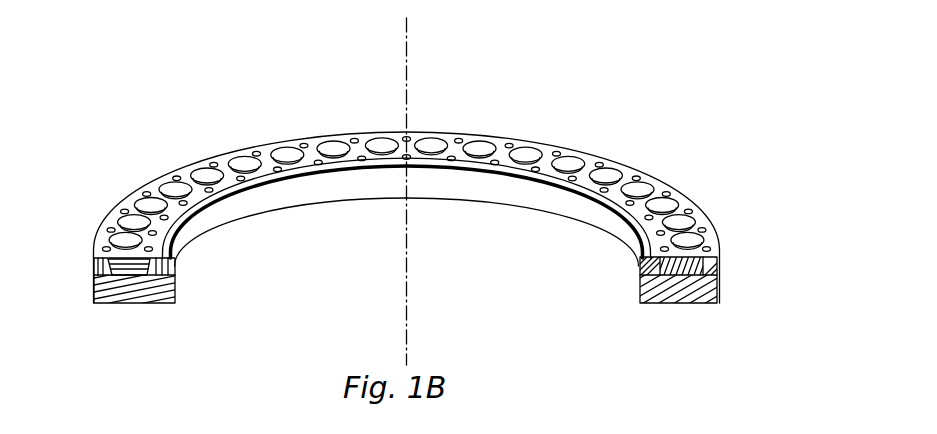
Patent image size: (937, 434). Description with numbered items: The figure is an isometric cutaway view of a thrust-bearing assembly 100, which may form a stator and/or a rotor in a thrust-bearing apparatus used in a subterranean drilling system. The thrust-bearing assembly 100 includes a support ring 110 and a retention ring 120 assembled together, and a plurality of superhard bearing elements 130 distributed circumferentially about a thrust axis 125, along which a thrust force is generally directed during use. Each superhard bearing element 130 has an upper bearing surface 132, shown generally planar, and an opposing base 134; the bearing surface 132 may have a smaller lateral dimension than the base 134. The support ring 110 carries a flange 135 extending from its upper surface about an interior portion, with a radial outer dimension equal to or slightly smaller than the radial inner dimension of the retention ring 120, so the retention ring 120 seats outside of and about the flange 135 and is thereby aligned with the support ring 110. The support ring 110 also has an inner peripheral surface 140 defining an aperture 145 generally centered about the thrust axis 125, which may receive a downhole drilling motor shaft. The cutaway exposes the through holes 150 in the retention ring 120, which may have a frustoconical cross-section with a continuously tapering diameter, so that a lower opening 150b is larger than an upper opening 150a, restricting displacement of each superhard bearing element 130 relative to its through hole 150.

The thrust-bearing assembly 100 is at (449, 232).
The support ring 110 is at (449, 301).
The retention ring 120 is at (721, 214).
The thrust axis 125 is at (407, 57).
The superhard bearing element 130 is at (671, 280).
The upper bearing surface 132 is at (456, 242).
The base 134 is at (699, 281).
The flange 135 is at (185, 230).
The inner peripheral surface 140 is at (263, 202).
The aperture 145 is at (488, 289).
The through hole 150 is at (690, 292).
The upper opening 150a is at (648, 257).
The lower opening 150b is at (640, 295).